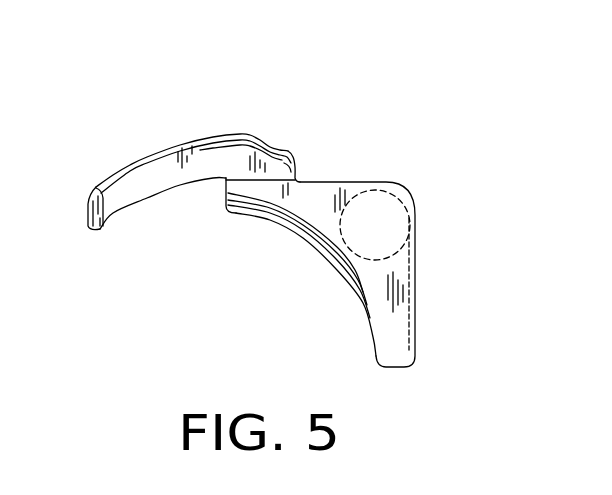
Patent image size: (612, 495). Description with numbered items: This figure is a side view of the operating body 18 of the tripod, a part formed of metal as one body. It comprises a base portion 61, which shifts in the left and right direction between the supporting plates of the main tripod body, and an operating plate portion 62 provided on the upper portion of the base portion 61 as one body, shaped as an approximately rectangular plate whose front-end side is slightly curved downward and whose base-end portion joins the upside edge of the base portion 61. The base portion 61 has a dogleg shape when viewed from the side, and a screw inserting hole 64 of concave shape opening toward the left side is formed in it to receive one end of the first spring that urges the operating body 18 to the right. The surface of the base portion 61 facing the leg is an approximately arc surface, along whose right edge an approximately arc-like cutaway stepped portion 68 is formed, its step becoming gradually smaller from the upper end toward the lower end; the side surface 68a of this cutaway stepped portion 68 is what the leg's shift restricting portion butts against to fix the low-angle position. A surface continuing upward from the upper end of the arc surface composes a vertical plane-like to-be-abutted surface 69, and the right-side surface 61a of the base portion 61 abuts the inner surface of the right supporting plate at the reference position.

The operating body 18 is at (262, 90).
The base portion 61 is at (415, 294).
The right-side surface 61a is at (293, 161).
The operating plate portion 62 is at (137, 163).
The screw inserting hole 64 is at (397, 196).
The cutaway stepped portion 68 is at (323, 245).
The side surface 68a is at (255, 207).
The to-be-abutted surface 69 is at (222, 188).